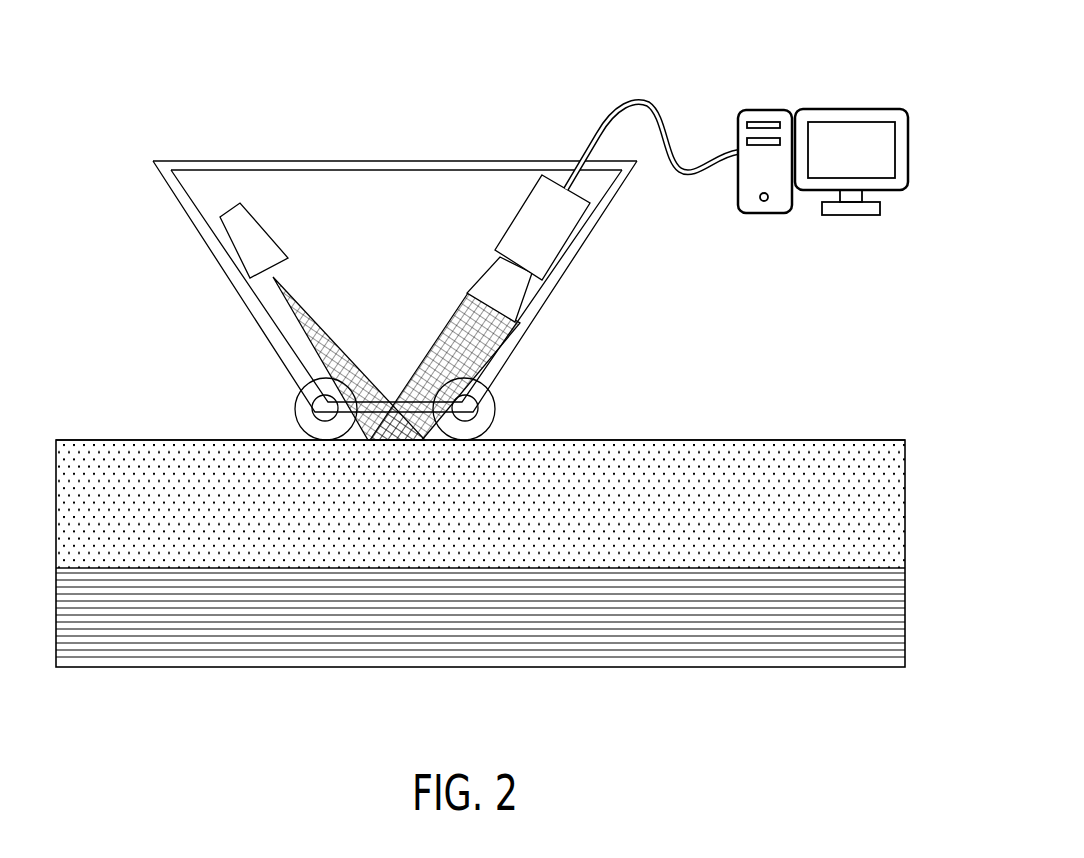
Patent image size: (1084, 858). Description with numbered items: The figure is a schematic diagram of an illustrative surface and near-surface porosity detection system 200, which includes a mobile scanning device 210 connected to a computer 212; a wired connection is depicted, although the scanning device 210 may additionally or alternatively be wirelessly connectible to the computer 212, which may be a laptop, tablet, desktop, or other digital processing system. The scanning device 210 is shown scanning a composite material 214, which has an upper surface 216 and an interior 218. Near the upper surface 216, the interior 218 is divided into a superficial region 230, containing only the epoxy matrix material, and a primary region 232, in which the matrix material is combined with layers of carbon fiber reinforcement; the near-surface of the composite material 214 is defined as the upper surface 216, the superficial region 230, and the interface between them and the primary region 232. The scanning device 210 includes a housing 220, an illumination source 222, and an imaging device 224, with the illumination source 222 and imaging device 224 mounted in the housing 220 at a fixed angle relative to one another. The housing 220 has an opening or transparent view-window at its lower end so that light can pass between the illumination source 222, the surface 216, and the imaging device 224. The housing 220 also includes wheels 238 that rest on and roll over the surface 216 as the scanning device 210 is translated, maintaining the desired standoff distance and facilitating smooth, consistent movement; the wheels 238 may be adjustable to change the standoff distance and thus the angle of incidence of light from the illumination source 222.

The surface and near-surface porosity detection system 200 is at (106, 88).
The mobile scanning device 210 is at (236, 142).
The computer 212 is at (777, 203).
The composite material 214 is at (85, 440).
The upper surface 216 is at (683, 426).
The interior 218 is at (884, 548).
The housing 220 is at (392, 160).
The illumination source 222 is at (253, 235).
The imaging device 224 is at (528, 232).
The superficial region 230 is at (880, 503).
The primary region 232 is at (880, 613).
The wheels 238 is at (487, 408).